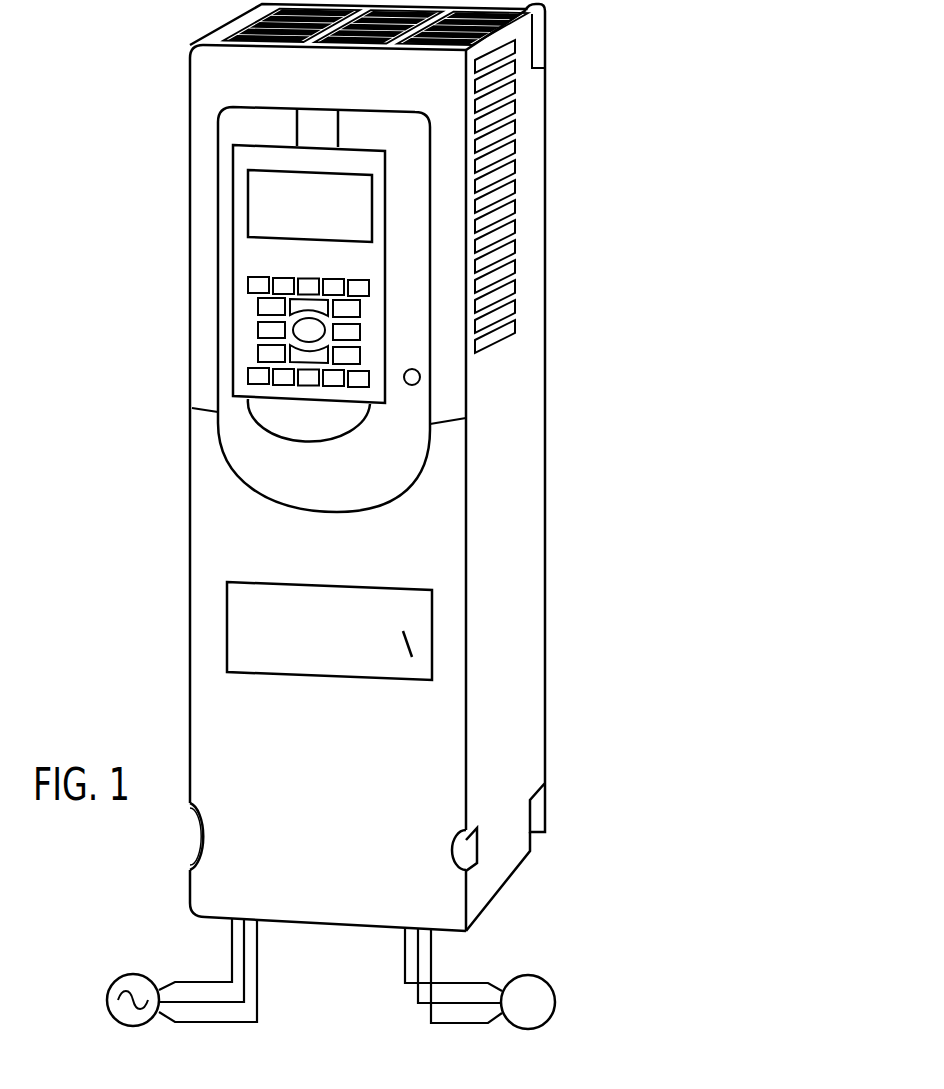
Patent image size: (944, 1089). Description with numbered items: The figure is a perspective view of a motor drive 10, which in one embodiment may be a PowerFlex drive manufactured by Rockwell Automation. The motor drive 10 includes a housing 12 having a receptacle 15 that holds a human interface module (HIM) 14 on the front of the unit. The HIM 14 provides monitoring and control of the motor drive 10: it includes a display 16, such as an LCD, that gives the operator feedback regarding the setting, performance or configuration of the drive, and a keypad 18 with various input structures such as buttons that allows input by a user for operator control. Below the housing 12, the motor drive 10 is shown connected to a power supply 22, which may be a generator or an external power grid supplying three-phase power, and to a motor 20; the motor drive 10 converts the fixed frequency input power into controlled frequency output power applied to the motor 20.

The motor drive 10 is at (583, 73).
The housing 12 is at (523, 598).
The human interface module (HIM) 14 is at (245, 255).
The receptacle 15 is at (303, 438).
The display 16 is at (271, 212).
The keypad 18 is at (272, 330).
The motor 20 is at (548, 977).
The power supply 22 is at (115, 982).